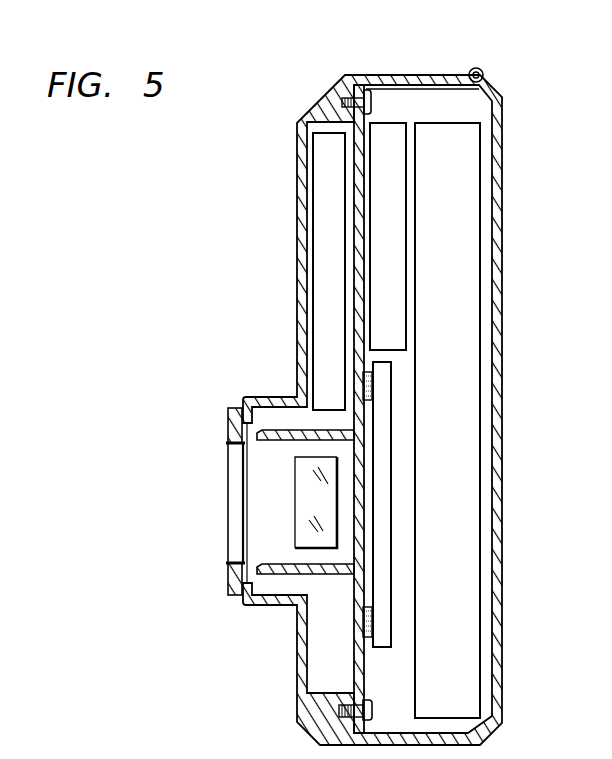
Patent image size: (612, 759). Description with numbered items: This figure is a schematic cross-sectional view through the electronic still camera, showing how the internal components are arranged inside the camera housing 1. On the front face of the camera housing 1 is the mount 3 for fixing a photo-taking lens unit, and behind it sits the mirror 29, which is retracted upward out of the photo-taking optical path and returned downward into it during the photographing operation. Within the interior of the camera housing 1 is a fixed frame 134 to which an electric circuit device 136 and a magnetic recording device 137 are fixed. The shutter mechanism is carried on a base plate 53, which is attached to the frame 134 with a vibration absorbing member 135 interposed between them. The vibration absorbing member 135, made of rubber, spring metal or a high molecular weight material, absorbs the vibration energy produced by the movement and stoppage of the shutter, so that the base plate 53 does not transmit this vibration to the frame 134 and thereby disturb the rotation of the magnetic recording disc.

The camera housing 1 is at (299, 285).
The mount 3 is at (238, 483).
The mirror 29 is at (307, 509).
The base plate 53 is at (382, 599).
The fixed frame 134 is at (357, 337).
The vibration absorbing member 135 is at (370, 391).
The electric circuit device 136 is at (323, 215).
The magnetic recording device 137 is at (465, 233).